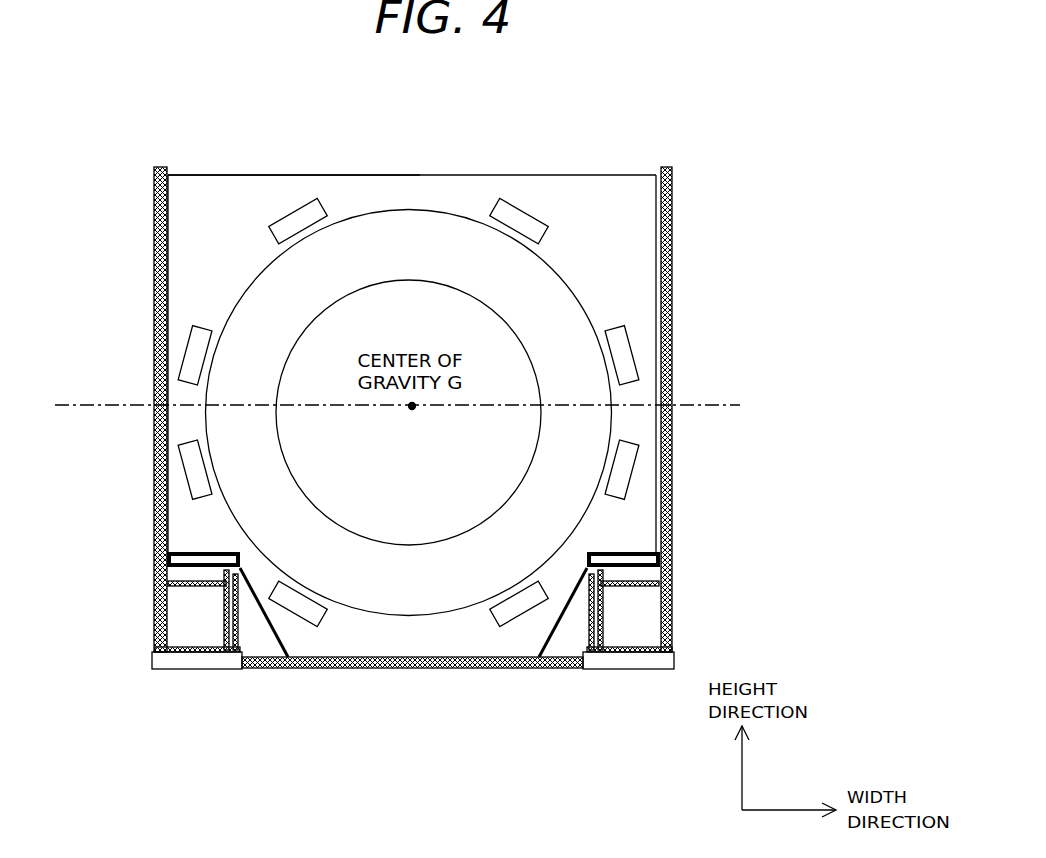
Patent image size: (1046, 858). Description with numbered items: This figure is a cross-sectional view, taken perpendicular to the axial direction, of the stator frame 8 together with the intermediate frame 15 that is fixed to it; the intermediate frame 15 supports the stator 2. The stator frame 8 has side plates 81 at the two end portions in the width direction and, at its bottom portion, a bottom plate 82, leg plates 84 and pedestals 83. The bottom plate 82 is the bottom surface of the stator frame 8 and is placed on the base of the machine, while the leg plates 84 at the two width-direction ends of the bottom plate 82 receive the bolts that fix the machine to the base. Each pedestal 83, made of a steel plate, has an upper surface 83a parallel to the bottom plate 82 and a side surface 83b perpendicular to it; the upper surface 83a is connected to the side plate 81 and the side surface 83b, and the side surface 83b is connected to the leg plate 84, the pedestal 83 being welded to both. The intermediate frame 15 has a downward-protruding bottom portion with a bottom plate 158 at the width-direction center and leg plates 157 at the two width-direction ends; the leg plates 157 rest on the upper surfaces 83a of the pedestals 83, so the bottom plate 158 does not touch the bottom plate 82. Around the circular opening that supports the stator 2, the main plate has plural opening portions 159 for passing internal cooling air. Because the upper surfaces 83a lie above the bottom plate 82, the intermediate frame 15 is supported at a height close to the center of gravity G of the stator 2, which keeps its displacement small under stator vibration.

The stator 2 is at (393, 230).
The stator frame 8 is at (678, 230).
The intermediate frame 15 is at (243, 174).
The side plate 81 is at (670, 322).
The bottom plate 82 is at (492, 668).
The pedestal 83 is at (243, 612).
The upper surface 83a is at (178, 573).
The side surface 83b is at (230, 603).
The leg plate 84 is at (195, 662).
The leg plate 157 is at (195, 561).
The bottom plate 158 is at (347, 657).
The opening portion 159 is at (522, 218).